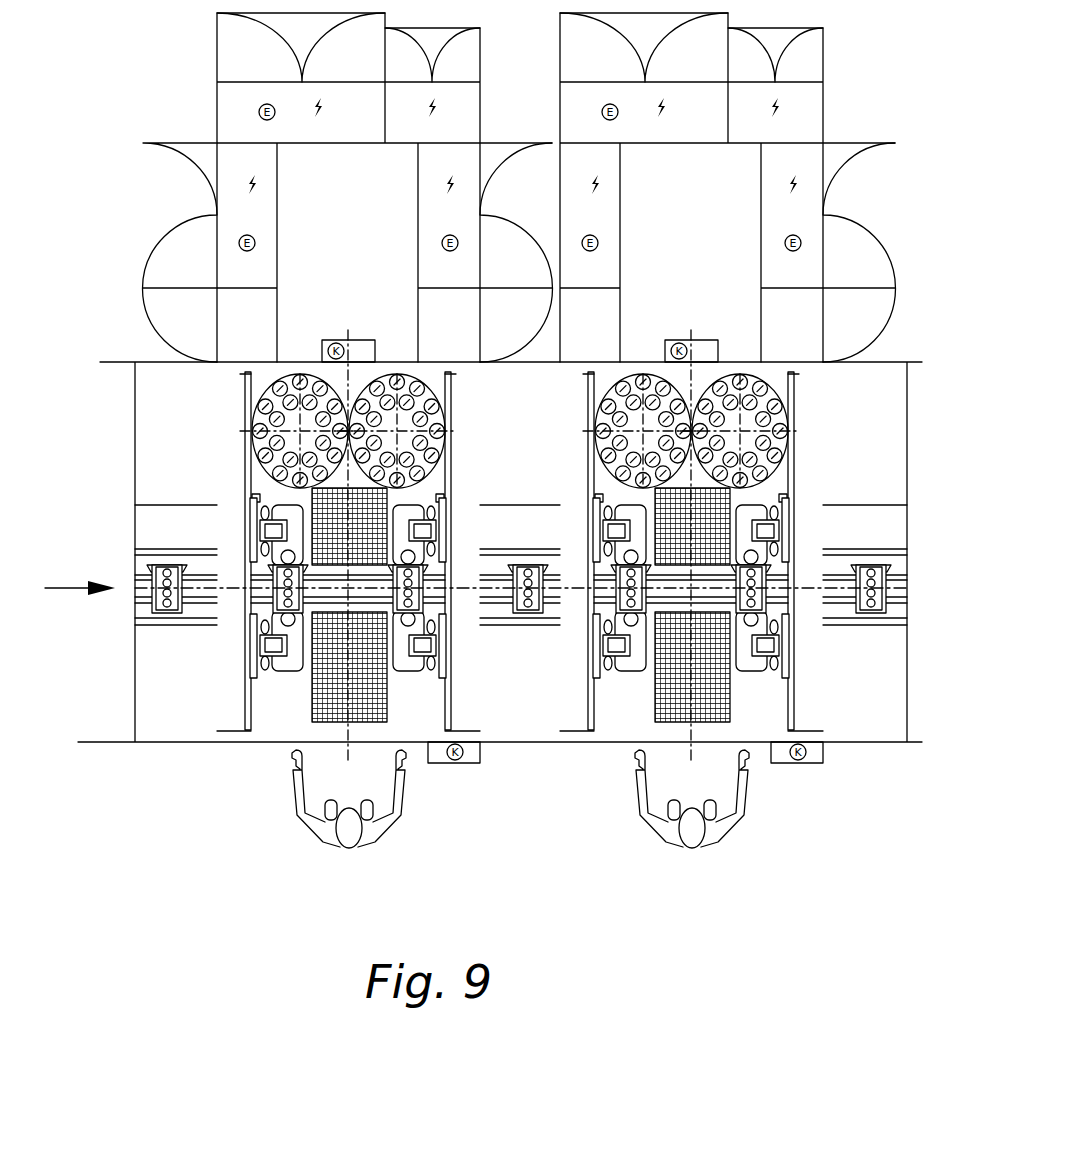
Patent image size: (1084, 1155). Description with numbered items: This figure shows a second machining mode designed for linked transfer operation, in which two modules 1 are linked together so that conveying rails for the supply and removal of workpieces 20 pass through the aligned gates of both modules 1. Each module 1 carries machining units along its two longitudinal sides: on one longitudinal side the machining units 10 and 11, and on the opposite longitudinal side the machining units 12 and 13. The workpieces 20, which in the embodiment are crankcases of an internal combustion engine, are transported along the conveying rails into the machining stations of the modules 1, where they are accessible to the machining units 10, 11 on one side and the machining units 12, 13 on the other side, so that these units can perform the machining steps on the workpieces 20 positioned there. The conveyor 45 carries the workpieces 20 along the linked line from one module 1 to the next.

The module 1 is at (333, 324).
The machining unit 10 is at (273, 650).
The machining unit 11 is at (268, 529).
The machining unit 12 is at (436, 528).
The machining unit 13 is at (406, 621).
The workpiece 20 is at (161, 614).
The conveyor 45 is at (201, 599).